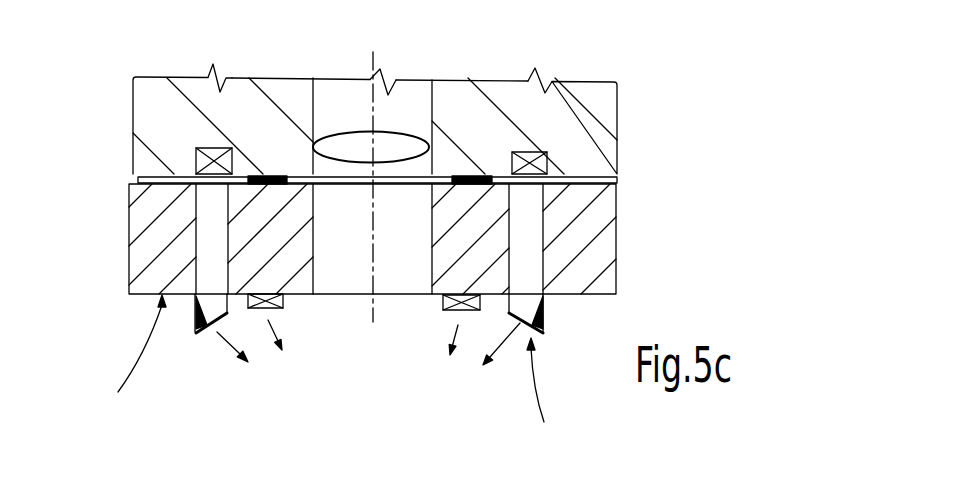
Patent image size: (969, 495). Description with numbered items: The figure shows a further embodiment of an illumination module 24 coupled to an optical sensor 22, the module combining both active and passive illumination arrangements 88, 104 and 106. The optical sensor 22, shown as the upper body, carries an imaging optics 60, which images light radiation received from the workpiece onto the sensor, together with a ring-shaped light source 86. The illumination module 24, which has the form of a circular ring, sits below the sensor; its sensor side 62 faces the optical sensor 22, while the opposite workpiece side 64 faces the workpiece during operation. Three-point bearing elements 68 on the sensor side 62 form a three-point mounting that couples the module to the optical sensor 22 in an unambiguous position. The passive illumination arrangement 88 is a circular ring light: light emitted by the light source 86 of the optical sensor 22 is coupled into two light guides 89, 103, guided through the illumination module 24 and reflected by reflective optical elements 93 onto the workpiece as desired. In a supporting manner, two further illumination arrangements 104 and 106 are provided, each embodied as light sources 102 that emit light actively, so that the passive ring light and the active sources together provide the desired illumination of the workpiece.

The optical sensor 22 is at (595, 128).
The illumination module 24 is at (600, 255).
The imaging optics 60 is at (362, 142).
The sensor side 62 is at (138, 178).
The workpiece side 64 is at (137, 359).
The three-point bearing elements 68 is at (468, 176).
The light source 86 is at (527, 160).
The illumination arrangement 88 is at (551, 385).
The light guide 89 is at (542, 217).
The reflective optical elements 93 is at (543, 324).
The light sources 102 is at (283, 302).
The light guide 103 is at (197, 242).
The illumination arrangement 104 is at (453, 312).
The illumination arrangement 106 is at (258, 311).